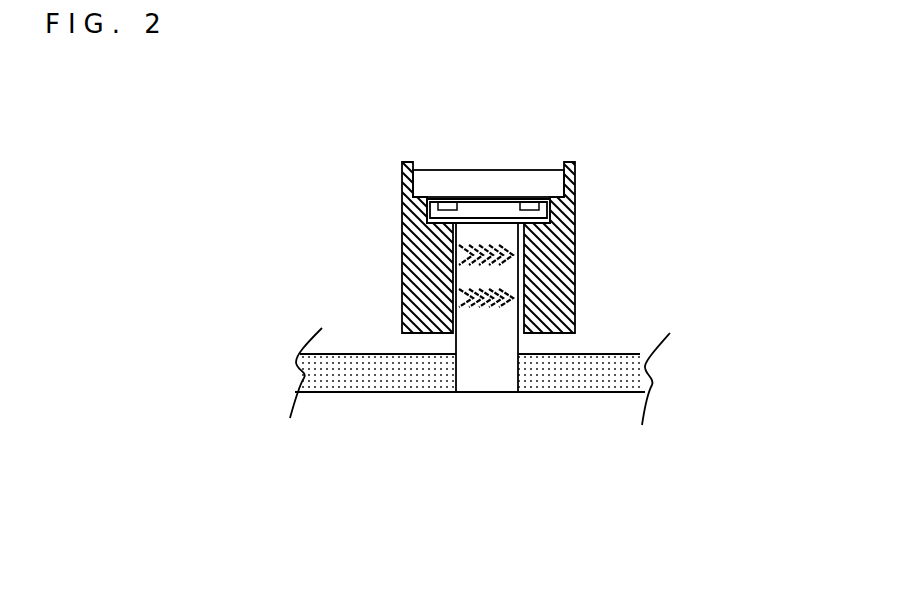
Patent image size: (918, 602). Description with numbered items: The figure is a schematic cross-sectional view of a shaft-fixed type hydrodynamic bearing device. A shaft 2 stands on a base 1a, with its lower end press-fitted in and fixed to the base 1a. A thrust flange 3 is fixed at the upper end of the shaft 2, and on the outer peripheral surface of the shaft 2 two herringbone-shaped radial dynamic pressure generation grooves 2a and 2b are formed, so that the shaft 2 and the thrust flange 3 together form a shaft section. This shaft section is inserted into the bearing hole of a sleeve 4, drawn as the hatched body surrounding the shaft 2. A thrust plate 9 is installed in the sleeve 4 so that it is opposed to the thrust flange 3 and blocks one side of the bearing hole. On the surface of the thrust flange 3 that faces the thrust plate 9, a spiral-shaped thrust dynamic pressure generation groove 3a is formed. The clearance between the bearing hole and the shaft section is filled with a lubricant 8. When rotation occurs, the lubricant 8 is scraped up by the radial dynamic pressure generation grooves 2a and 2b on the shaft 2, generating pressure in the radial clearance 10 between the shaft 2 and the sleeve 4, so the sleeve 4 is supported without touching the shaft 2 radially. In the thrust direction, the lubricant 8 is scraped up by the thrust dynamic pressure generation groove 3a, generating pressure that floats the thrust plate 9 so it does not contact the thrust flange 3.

The base 1a is at (372, 385).
The shaft 2 is at (480, 373).
The radial dynamic pressure generation groove 2a is at (487, 308).
The radial dynamic pressure generation groove 2b is at (488, 263).
The thrust flange 3 is at (412, 156).
The thrust dynamic pressure generation groove 3a is at (391, 186).
The sleeve 4 is at (555, 333).
The lubricant 8 is at (575, 294).
The thrust plate 9 is at (483, 183).
The radial clearance 10 is at (520, 251).